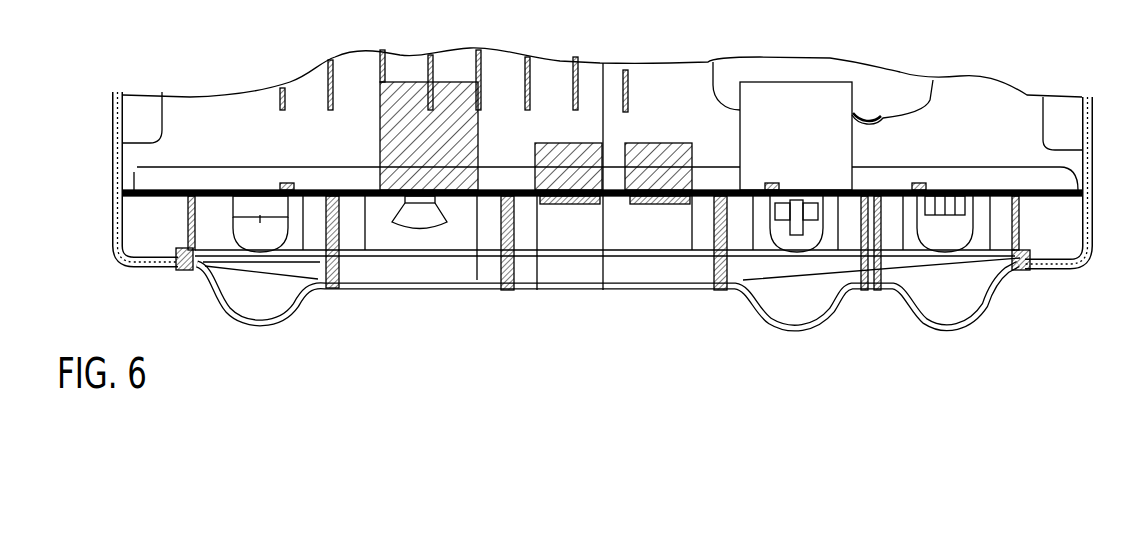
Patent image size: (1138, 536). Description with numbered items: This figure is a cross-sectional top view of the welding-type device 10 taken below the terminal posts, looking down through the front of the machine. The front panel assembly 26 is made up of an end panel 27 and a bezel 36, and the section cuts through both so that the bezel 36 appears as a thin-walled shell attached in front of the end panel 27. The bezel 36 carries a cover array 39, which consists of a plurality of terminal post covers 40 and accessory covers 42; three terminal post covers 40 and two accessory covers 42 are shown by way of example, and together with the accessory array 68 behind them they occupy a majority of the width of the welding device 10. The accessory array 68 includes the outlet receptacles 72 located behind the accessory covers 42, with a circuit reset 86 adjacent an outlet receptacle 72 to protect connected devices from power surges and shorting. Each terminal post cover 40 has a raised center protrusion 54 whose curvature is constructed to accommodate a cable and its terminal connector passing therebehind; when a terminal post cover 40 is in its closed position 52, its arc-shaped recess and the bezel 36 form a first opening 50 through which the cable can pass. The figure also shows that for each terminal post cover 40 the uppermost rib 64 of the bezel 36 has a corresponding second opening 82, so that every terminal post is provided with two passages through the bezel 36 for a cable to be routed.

The welding-type device 10 is at (216, 52).
The front panel assembly 26 is at (498, 362).
The end panel 27 is at (134, 185).
The bezel 36 is at (1083, 263).
The cover array 39 is at (104, 270).
The terminal post cover 40 is at (300, 297).
The accessory cover 42 is at (477, 289).
The opening 50 is at (273, 307).
The closed position 52 is at (166, 338).
The protrusion 54 is at (235, 320).
The uppermost rib 64 is at (985, 222).
The accessory array 68 is at (1052, 235).
The outlet receptacle 72 is at (456, 80).
The second opening 82 is at (262, 215).
The circuit reset 86 is at (425, 216).